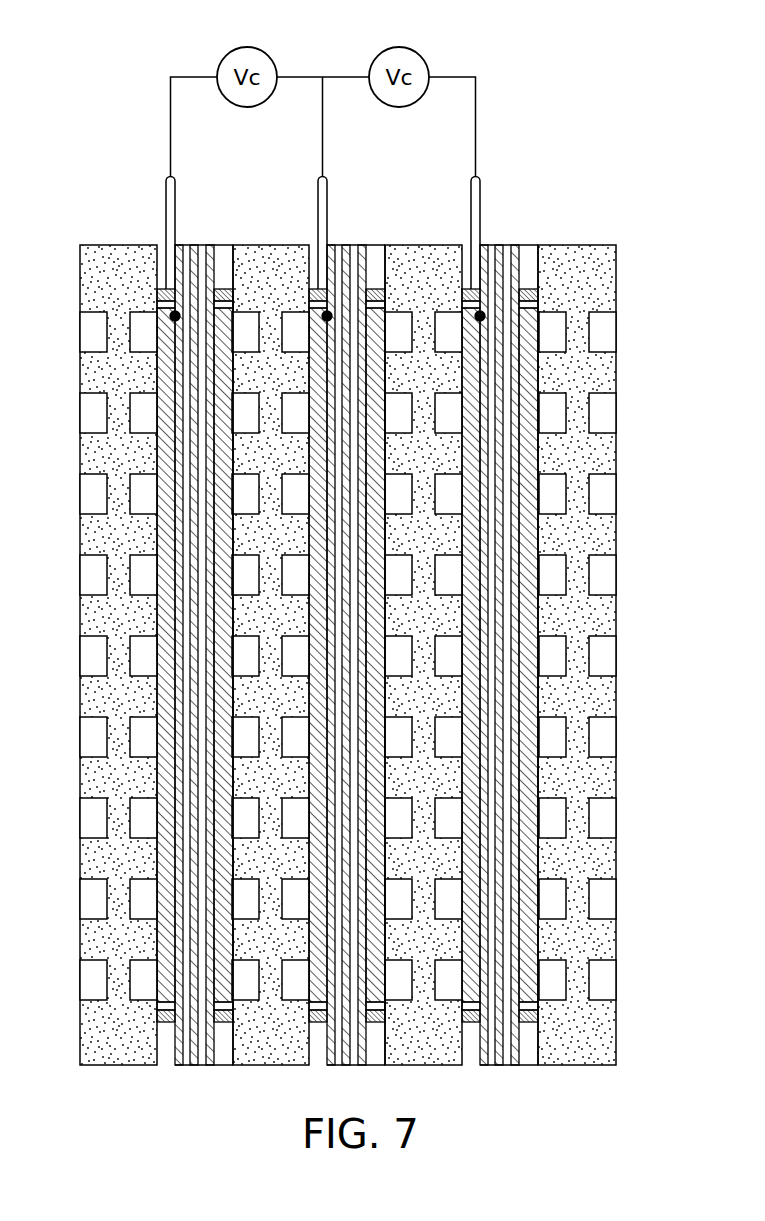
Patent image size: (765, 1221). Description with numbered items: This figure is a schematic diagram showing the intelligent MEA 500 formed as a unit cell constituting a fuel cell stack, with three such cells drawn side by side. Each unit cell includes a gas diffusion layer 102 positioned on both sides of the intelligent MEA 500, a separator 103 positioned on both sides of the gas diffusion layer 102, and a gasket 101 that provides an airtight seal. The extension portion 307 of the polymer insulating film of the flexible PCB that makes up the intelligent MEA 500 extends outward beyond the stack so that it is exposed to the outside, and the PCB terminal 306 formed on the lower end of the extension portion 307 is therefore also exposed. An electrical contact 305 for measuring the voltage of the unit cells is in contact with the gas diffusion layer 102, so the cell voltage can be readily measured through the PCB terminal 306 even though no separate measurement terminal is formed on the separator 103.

The gasket 101 is at (601, 651).
The gas diffusion layer 102 is at (601, 655).
The separator 103 is at (605, 455).
The electrical contact 305 is at (15, 318).
The PCB terminal 306 is at (136, 233).
The extension portion 307 is at (140, 642).
The intelligent MEA 500 is at (573, 621).